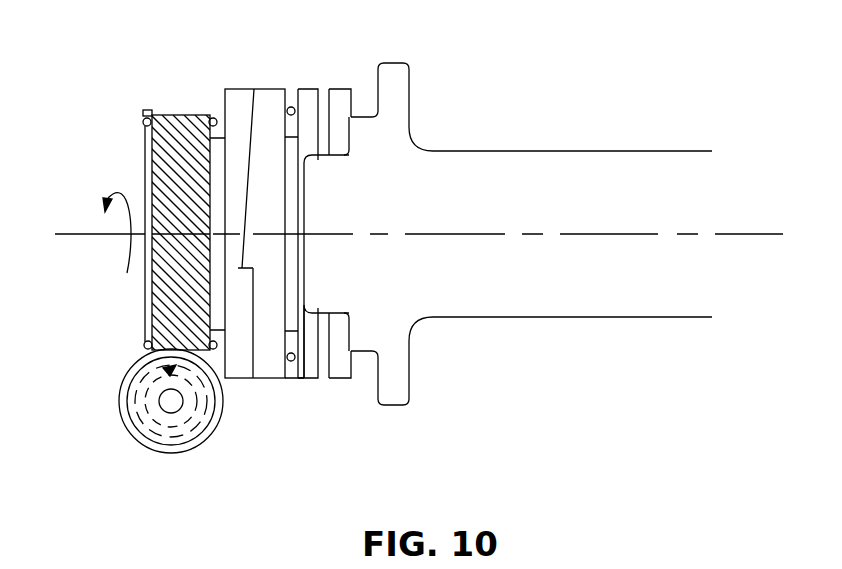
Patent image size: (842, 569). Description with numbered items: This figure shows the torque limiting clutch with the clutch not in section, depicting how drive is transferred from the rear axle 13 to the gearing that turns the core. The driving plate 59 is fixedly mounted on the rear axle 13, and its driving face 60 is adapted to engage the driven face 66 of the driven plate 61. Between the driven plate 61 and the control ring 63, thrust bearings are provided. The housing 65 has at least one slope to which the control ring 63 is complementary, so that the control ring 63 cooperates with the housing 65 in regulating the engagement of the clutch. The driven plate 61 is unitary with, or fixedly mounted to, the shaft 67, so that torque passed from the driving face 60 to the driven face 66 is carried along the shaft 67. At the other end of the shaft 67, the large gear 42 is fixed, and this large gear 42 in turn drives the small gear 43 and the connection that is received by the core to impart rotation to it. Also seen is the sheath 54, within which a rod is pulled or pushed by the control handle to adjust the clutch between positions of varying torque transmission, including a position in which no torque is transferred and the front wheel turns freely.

The rear axle 13 is at (427, 165).
The large gear 42 is at (180, 118).
The small gear 43 is at (122, 381).
The sheath 54 is at (248, 242).
The driving plate 59 is at (341, 367).
The driving face 60 is at (328, 97).
The driven plate 61 is at (310, 97).
The control ring 63 is at (270, 98).
The housing 65 is at (237, 98).
The driven face 66 is at (321, 363).
The shaft 67 is at (217, 153).